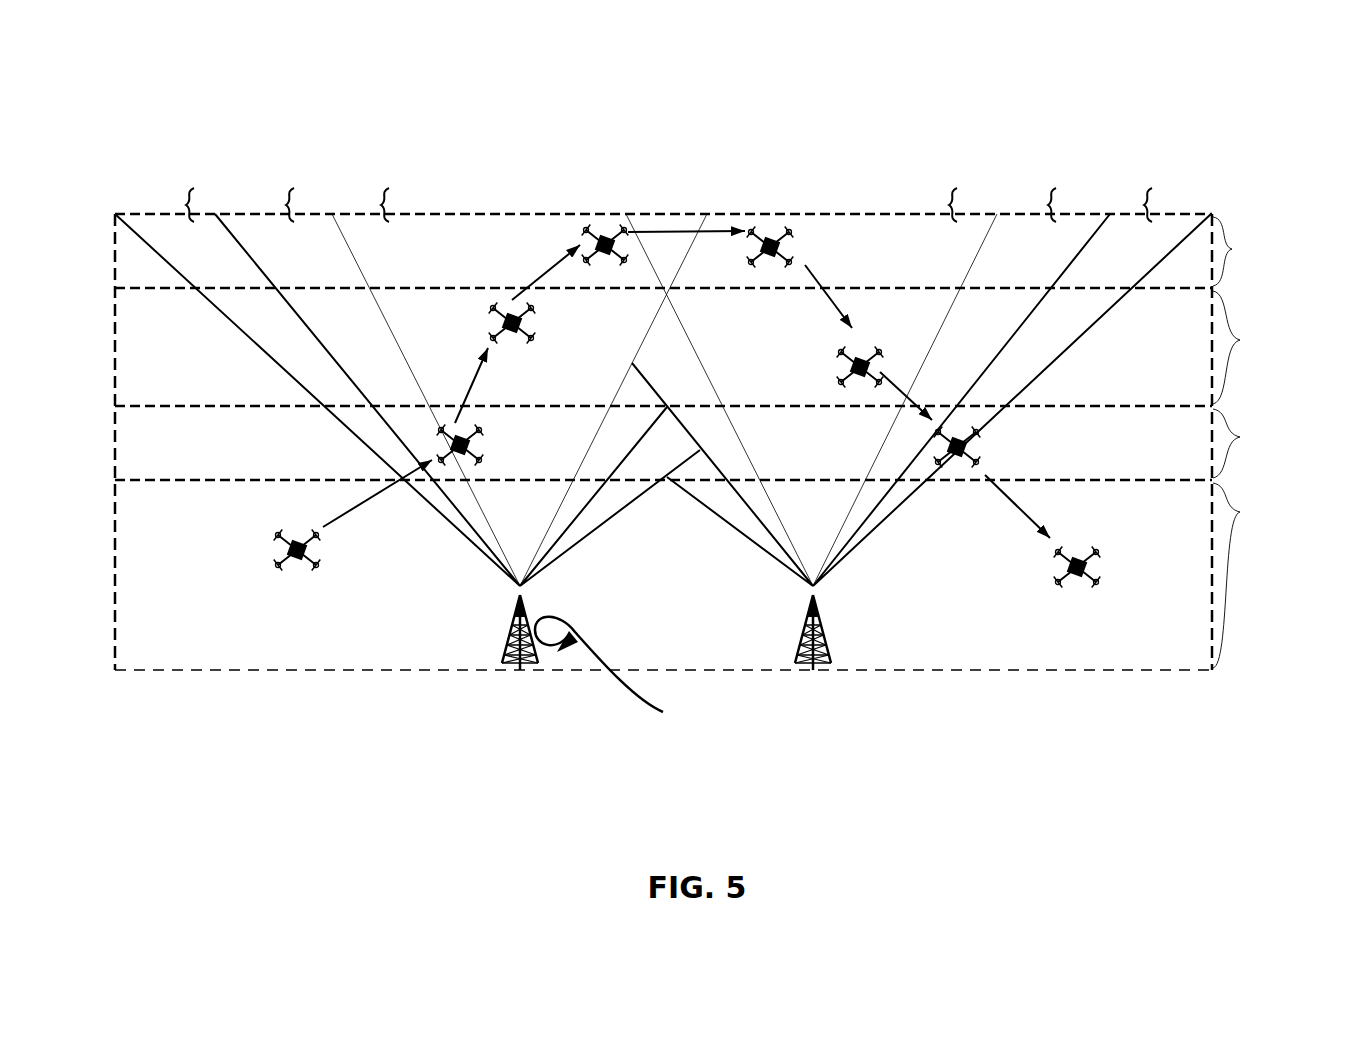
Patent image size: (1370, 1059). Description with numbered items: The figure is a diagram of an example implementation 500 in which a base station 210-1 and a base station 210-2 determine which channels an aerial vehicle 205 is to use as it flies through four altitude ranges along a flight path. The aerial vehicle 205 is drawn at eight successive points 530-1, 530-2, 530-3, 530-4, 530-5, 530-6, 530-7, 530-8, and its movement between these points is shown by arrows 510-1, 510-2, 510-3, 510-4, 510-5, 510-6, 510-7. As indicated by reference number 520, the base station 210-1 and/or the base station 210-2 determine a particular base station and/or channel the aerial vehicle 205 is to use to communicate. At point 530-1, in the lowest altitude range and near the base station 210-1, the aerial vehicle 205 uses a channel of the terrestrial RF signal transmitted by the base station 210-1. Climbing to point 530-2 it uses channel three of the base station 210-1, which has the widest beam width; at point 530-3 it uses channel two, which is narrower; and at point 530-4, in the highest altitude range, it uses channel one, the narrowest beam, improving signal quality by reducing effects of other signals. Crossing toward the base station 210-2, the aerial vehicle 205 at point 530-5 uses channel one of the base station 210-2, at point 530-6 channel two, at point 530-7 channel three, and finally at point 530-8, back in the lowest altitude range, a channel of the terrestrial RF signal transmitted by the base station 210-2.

The example implementation 500 is at (216, 52).
The aerial vehicle 205 is at (657, 401).
The base station 210-1 is at (411, 442).
The base station 210-2 is at (918, 442).
The aerial vehicle movement 510-1 is at (402, 564).
The aerial vehicle movement 510-2 is at (466, 393).
The aerial vehicle movement 510-3 is at (531, 281).
The aerial vehicle movement 510-4 is at (669, 228).
The aerial vehicle movement 510-5 is at (893, 262).
The aerial vehicle movement 510-6 is at (975, 377).
The aerial vehicle movement 510-7 is at (1068, 461).
The base station and channel determination 520 is at (670, 741).
The aerial vehicle point 530-1 is at (268, 548).
The aerial vehicle point 530-2 is at (437, 431).
The aerial vehicle point 530-3 is at (484, 320).
The aerial vehicle point 530-4 is at (584, 223).
The aerial vehicle point 530-5 is at (763, 223).
The aerial vehicle point 530-6 is at (841, 373).
The aerial vehicle point 530-7 is at (932, 454).
The aerial vehicle point 530-8 is at (1050, 567).